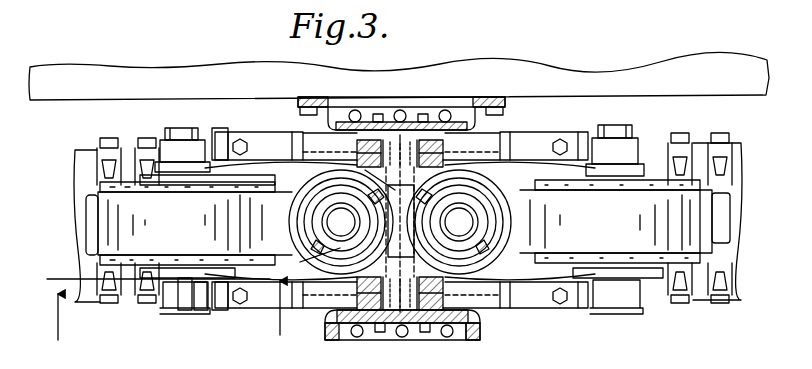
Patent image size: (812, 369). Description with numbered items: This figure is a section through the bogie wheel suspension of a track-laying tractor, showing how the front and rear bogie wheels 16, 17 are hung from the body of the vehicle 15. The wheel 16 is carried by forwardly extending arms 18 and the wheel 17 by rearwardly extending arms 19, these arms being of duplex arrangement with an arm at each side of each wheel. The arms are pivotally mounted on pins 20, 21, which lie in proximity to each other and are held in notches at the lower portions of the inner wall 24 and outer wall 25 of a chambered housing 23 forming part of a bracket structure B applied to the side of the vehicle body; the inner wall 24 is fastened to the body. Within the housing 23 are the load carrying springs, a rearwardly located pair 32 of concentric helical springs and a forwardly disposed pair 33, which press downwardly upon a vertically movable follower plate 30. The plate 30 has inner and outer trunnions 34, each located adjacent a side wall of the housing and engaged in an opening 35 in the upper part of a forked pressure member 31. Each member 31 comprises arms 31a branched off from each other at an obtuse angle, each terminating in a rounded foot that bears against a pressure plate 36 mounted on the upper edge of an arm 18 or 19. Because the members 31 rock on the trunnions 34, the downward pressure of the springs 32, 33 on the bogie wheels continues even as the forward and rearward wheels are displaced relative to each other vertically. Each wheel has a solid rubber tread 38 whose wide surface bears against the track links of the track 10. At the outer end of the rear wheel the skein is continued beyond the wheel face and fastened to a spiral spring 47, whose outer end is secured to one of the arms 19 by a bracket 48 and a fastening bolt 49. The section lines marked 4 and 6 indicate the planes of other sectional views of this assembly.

The body of the tractor or other vehicle 15 is at (633, 68).
The truck frame 10 is at (738, 162).
The front bogie wheel 16 is at (700, 218).
The rear bogie wheel 17 is at (97, 224).
The solid rubber tread 38 is at (195, 223).
The forwardly extending arms 18 is at (600, 147).
The rearwardly extending arms 19 is at (167, 140).
The inner wall 24 is at (350, 114).
The outer wall 25 is at (350, 320).
The pin 20 is at (440, 338).
The pin 21 is at (387, 340).
The chambered member or housing 23 is at (477, 338).
The bracket structure B is at (480, 335).
The follower plate 30 is at (490, 263).
The forked pressure members 31 is at (513, 140).
The arms of pressure member 31a is at (268, 143).
The rearwardly located pair of concentric helical springs 32 is at (310, 187).
The forwardly disposed pair of concentric helical springs 33 is at (483, 188).
The trunnions 34 is at (441, 152).
The opening 35 is at (357, 152).
The pressure plate 36 is at (221, 140).
The spiral spring 47 is at (153, 273).
The bracket 48 is at (201, 305).
The fastening bolt 49 is at (186, 312).
The section line 4- 4 is at (157, 320).
The section indicator 6 is at (368, 361).